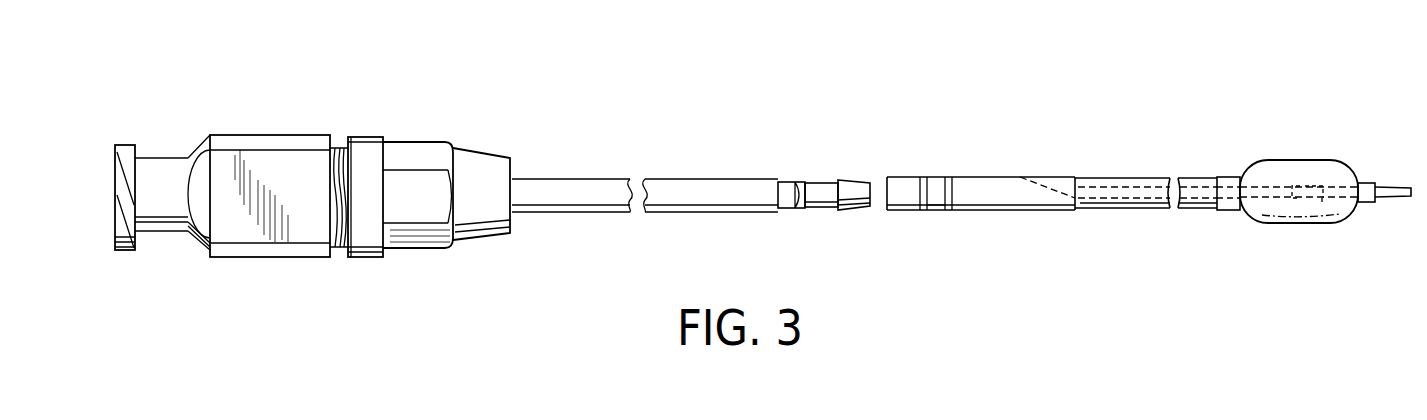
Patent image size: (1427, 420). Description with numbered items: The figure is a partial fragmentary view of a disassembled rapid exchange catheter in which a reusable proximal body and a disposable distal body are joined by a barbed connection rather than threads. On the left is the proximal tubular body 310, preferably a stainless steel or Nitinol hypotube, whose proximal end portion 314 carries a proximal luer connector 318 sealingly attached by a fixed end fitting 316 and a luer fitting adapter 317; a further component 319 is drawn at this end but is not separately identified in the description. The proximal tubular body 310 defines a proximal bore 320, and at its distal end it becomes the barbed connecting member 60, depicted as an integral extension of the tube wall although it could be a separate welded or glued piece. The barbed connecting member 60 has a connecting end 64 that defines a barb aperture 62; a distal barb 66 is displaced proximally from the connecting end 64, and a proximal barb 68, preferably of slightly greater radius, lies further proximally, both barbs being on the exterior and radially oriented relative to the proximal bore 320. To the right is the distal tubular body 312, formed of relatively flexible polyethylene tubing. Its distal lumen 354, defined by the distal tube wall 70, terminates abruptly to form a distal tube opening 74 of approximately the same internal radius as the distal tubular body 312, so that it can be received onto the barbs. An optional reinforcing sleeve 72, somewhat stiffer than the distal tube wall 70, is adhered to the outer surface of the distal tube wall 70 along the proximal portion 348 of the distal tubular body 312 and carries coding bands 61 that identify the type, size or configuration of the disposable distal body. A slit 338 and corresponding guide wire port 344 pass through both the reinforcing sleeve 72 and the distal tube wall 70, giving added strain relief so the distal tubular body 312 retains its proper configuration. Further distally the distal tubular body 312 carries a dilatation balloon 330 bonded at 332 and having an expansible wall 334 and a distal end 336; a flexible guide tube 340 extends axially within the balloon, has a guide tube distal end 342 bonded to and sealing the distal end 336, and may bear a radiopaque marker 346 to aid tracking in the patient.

The barbed connecting member 60 is at (806, 213).
The coding bands 61 is at (950, 177).
The barb aperture 62 is at (872, 190).
The connecting end 64 is at (855, 225).
The distal barb 66 is at (838, 210).
The proximal barb 68 is at (795, 182).
The distal tube wall 70 is at (1115, 203).
The reinforcing sleeve 72 is at (1000, 210).
The distal tube opening 74 is at (887, 206).
The proximal tubular body 310 is at (650, 178).
The distal tubular body 312 is at (1185, 177).
The proximal end portion 314 is at (510, 138).
The fixed end fitting 316 is at (383, 137).
The luer fitting adapter 317 is at (270, 135).
The proximal luer connector 318 is at (125, 252).
The neck 319 is at (135, 207).
The proximal bore 320 is at (720, 213).
The dilatation balloon 330 is at (1329, 179).
The bond 332 is at (1227, 177).
The expansible wall 334 is at (1330, 160).
The distal end of dilatation balloon 336 is at (1370, 183).
The slit 338 is at (1060, 172).
The flexible guide tube 340 is at (1322, 200).
The guide tube distal end 342 is at (1383, 198).
The guide wire port 344 is at (1037, 177).
The radiopaque marker 346 is at (1298, 200).
The proximal portion 348 is at (1031, 183).
The distal lumen 354 is at (933, 205).